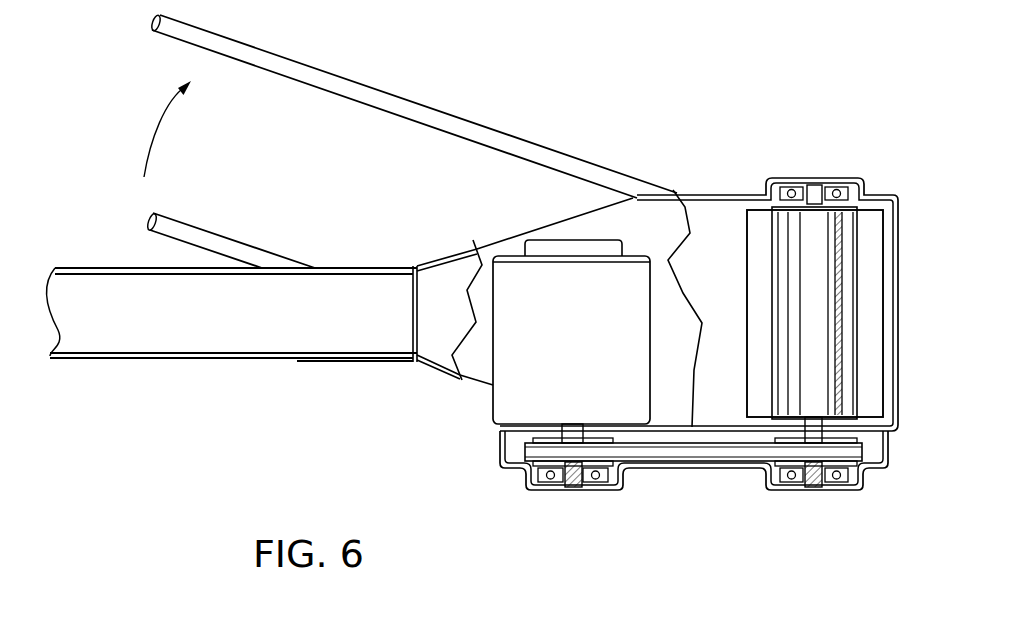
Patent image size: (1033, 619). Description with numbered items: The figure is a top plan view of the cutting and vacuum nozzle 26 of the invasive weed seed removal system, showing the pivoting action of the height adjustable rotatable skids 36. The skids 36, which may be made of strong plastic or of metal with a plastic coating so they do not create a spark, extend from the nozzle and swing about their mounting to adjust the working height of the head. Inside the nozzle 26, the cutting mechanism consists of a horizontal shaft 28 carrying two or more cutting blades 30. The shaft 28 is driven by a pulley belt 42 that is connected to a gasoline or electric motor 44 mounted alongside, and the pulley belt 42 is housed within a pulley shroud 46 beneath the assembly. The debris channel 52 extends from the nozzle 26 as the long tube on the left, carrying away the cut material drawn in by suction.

The cutting and vacuum nozzle 26 is at (655, 228).
The horizontal shaft 28 is at (813, 257).
The cutting blades 30 is at (758, 282).
The height adjustable rotatable skids 36 is at (395, 107).
The pulley belt 42 is at (693, 453).
The motor 44 is at (523, 362).
The pulley shroud 46 is at (548, 493).
The debris channel 52 is at (162, 317).